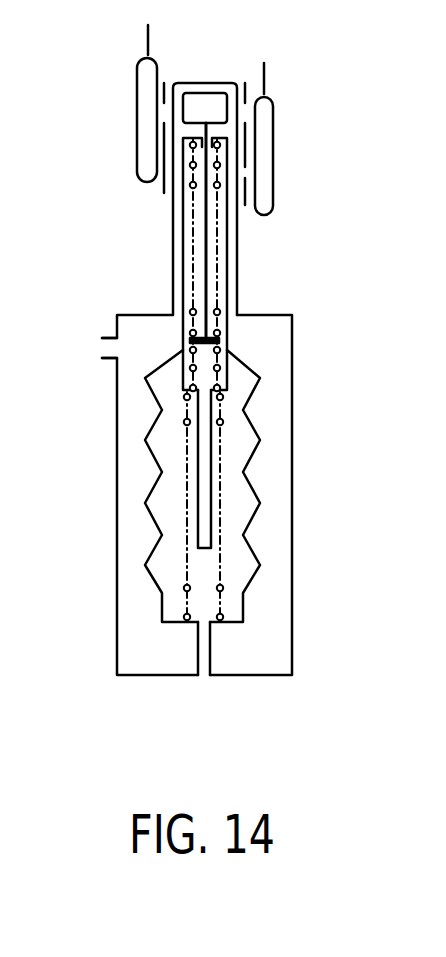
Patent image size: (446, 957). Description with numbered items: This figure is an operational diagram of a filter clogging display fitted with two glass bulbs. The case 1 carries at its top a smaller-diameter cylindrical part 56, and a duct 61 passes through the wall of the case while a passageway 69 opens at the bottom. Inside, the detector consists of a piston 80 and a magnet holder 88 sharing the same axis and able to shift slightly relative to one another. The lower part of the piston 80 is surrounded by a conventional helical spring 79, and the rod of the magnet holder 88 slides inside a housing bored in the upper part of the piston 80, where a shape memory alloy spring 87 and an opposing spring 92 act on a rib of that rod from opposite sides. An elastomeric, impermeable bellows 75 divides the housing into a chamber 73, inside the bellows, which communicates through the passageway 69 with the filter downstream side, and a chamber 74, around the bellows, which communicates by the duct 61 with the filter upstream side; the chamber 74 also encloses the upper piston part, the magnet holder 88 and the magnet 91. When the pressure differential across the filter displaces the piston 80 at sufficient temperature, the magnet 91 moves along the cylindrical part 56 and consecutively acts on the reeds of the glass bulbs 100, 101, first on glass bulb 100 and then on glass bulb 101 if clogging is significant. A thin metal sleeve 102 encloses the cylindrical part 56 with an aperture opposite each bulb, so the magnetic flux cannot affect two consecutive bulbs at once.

The case 1 is at (115, 457).
The smaller-diameter cylindrical part 56 is at (173, 212).
The duct 61 is at (102, 342).
The passageway 69 is at (205, 673).
The chamber 73 is at (153, 578).
The chamber 74 is at (127, 510).
The bellows 75 is at (252, 443).
The helical spring 79 is at (223, 588).
The piston 80 is at (207, 491).
The shape memory alloy spring 87 is at (213, 310).
The magnet holder 88 is at (202, 278).
The magnet 91 is at (210, 98).
The opposing spring 92 is at (230, 365).
The glass bulb 100 is at (142, 85).
The glass bulb 101 is at (268, 137).
The thin metal sleeve 102 is at (163, 193).